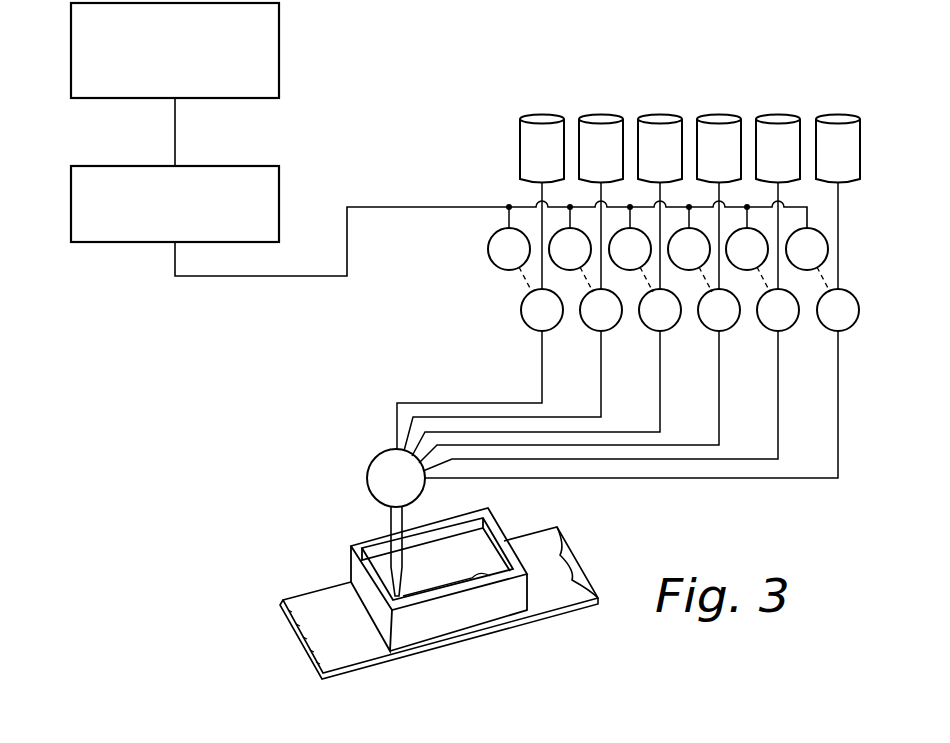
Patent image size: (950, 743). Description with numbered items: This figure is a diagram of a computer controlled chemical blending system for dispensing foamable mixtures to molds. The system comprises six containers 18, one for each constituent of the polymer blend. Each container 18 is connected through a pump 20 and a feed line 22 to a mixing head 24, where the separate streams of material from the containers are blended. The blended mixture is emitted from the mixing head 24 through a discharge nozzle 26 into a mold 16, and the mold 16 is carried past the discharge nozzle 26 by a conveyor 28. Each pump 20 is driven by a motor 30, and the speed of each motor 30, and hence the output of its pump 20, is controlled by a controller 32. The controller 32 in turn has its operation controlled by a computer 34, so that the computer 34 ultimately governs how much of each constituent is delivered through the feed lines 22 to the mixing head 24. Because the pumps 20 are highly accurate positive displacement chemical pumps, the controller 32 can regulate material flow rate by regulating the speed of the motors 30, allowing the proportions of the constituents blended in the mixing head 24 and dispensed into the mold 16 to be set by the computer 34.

The mold 16 is at (355, 563).
The containers 18 is at (647, 132).
The pump 20 is at (521, 311).
The feed line 22 is at (601, 352).
The mixing head 24 is at (383, 468).
The discharge nozzle 26 is at (392, 523).
The conveyor 28 is at (312, 610).
The motor 30 is at (490, 262).
The controller 32 is at (124, 229).
The computer 34 is at (91, 80).